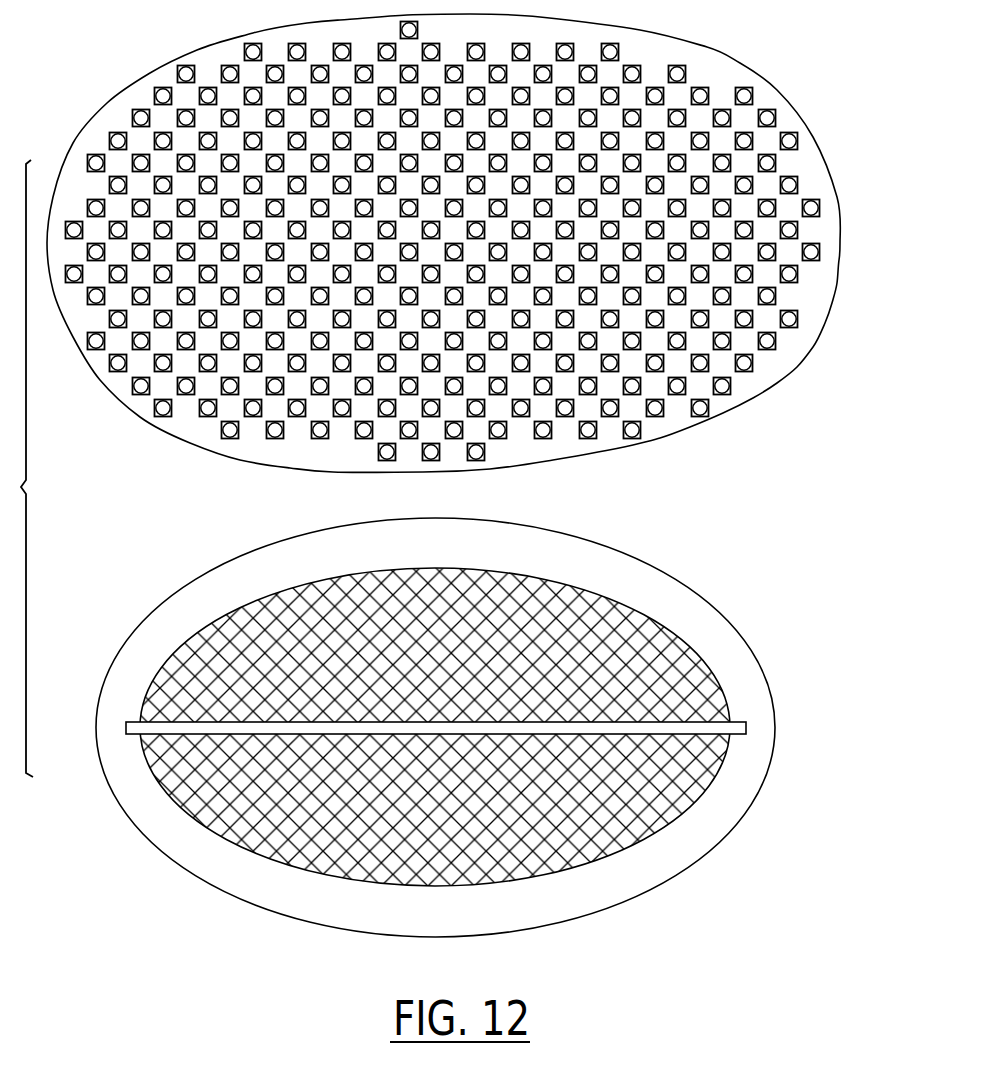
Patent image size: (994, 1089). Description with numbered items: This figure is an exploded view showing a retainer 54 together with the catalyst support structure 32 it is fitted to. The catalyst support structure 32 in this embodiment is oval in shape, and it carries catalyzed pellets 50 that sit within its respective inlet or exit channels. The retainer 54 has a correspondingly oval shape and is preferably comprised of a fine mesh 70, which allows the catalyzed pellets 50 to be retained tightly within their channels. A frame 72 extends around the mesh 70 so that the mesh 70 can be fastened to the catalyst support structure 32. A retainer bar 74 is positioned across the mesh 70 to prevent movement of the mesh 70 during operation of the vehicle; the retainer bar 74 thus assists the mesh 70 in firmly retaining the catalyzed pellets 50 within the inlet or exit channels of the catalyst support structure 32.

The catalyst support structure 32 is at (772, 93).
The catalyzed pellets 50 is at (777, 162).
The retainer 54 is at (222, 888).
The fine mesh 70 is at (350, 883).
The frame 72 is at (153, 828).
The retainer bar 74 is at (152, 732).